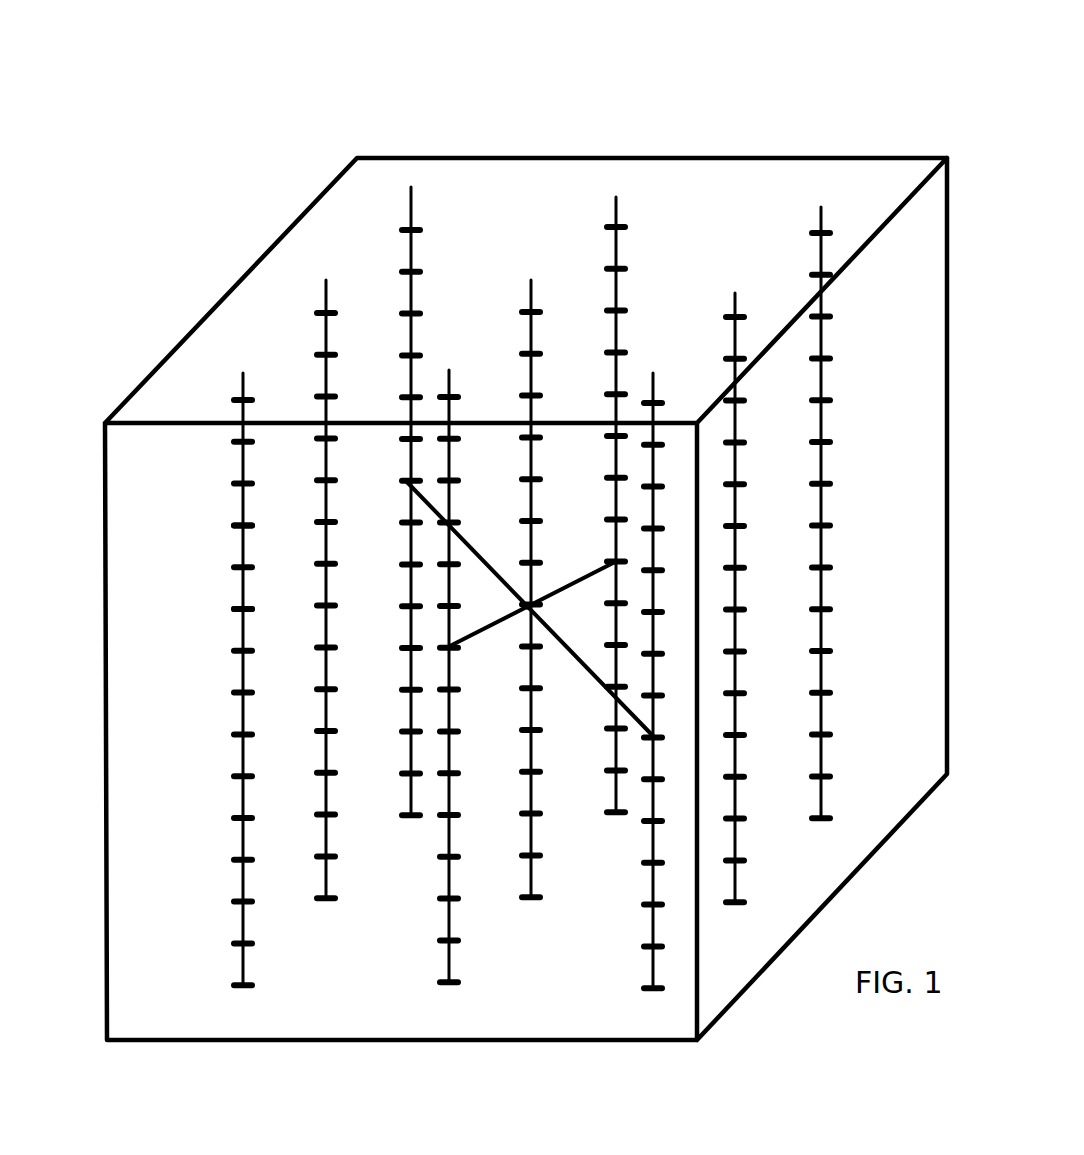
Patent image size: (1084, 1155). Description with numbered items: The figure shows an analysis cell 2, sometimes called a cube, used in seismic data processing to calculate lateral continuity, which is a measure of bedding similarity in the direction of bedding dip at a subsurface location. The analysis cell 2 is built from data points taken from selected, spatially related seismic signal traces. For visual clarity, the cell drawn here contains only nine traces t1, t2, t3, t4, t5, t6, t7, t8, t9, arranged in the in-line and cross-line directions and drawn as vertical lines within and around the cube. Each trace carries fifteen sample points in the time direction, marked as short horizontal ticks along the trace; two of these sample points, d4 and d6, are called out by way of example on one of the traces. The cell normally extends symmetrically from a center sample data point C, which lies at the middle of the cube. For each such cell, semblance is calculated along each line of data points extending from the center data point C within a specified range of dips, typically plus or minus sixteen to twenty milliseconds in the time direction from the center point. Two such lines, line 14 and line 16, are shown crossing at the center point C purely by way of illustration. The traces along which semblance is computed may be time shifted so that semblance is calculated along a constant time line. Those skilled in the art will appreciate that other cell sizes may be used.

The analysis cell 2 is at (917, 157).
The trace t1 is at (411, 187).
The trace t2 is at (326, 280).
The trace t3 is at (243, 373).
The trace t4 is at (616, 197).
The trace t5 is at (531, 280).
The trace t6 is at (449, 370).
The trace t7 is at (821, 207).
The trace t8 is at (735, 293).
The trace t9 is at (653, 373).
The sample point d4 is at (243, 525).
The sample point d6 is at (243, 608).
The center sample data point C is at (530, 603).
The line 14 is at (582, 660).
The line 16 is at (482, 630).